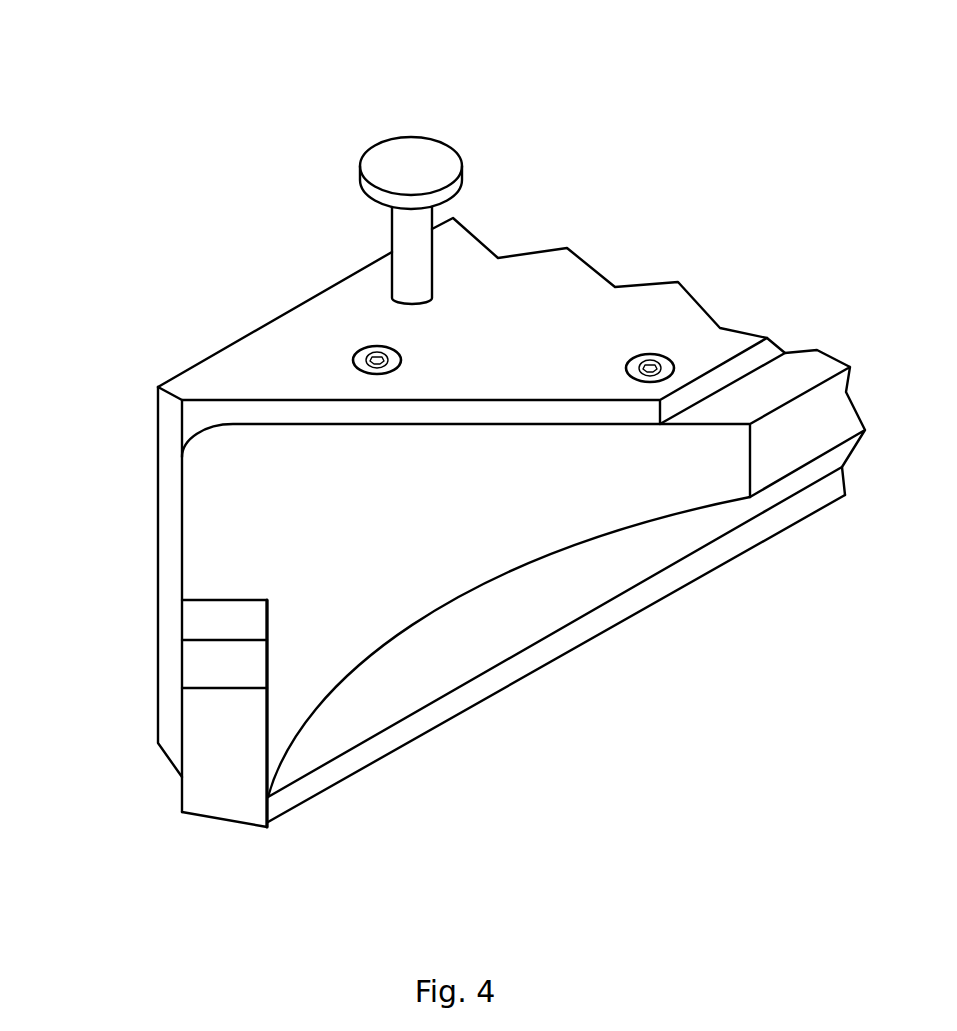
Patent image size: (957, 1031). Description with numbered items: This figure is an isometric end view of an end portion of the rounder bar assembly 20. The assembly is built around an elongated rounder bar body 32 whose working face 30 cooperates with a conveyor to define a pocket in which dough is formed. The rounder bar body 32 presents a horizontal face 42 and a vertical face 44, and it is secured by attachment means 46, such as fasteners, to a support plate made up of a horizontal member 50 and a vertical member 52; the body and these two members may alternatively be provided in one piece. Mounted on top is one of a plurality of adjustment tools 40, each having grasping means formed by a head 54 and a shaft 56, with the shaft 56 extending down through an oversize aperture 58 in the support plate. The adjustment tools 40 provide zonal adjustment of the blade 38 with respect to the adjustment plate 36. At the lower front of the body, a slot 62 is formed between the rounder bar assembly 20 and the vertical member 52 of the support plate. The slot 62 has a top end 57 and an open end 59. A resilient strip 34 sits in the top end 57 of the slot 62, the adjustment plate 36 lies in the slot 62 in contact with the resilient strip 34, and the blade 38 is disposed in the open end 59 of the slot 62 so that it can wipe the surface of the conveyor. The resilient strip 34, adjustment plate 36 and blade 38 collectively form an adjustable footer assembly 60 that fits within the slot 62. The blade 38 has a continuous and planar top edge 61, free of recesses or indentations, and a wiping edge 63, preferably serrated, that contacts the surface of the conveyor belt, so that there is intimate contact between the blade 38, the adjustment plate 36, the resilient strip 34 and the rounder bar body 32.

The rounder bar assembly 20 is at (630, 778).
The working face 30 is at (543, 624).
The rounder bar body 32 is at (392, 529).
The resilient strip 34 is at (198, 623).
The adjustment plate 36 is at (203, 670).
The blade 38 is at (200, 792).
The adjustment tool 40 is at (363, 106).
The horizontal face 42 is at (320, 411).
The vertical face 44 is at (168, 515).
The attachment means 46 is at (650, 358).
The horizontal member 50 is at (510, 345).
The vertical member 52 is at (170, 568).
The head 54 is at (440, 138).
The shaft 56 is at (410, 228).
The top end 57 is at (255, 600).
The oversize aperture 58 is at (440, 297).
The open end 59 is at (268, 800).
The adjustable footer assembly 60 is at (182, 842).
The top edge 61 is at (230, 674).
The slot 62 is at (253, 616).
The wiping edge 63 is at (237, 841).